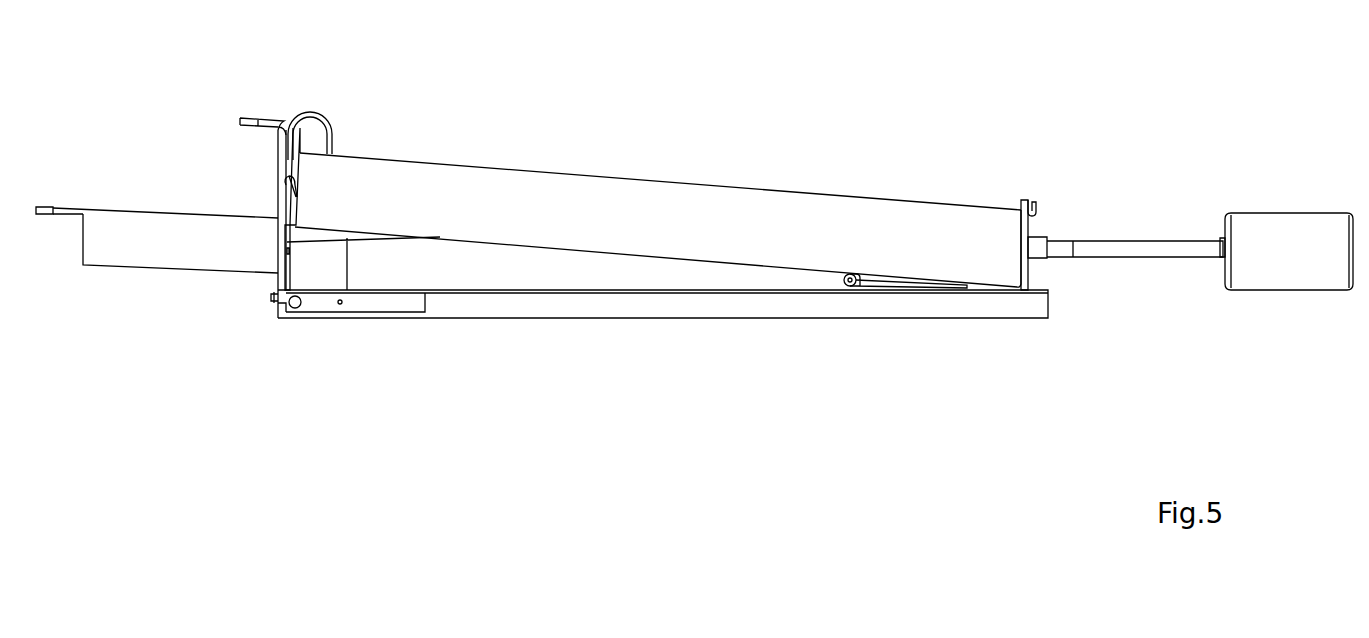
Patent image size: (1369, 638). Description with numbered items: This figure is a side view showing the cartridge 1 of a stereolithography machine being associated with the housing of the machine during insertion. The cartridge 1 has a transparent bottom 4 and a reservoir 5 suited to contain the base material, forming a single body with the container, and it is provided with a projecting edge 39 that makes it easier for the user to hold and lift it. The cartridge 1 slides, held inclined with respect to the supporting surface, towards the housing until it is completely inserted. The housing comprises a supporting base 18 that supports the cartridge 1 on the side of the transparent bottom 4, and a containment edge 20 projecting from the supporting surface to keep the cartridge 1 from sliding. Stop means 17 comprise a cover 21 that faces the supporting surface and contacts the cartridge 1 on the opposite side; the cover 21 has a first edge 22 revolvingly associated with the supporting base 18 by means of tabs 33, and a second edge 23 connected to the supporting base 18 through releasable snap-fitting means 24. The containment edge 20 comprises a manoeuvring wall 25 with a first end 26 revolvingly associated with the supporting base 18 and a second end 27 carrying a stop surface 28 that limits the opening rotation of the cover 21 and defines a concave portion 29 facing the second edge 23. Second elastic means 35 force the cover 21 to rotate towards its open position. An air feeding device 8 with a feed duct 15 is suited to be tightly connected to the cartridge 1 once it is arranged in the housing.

The cartridge 1 is at (125, 185).
The edge 39 is at (47, 200).
The reservoir 5 is at (123, 247).
The transparent bottom 4 is at (187, 272).
The releasable snap-fitting means 24 is at (277, 182).
The manoeuvring wall 25 is at (282, 202).
The first end 26 is at (277, 315).
The stop surface 28 is at (333, 120).
The stop means 17 is at (612, 160).
The concave portion 29 is at (315, 113).
The second edge 23 is at (307, 178).
The second end 27 is at (282, 182).
The cover 21 is at (660, 213).
The first edge 22 is at (1040, 195).
The tabs 33 is at (1037, 205).
The feed duct 15 is at (1150, 243).
The air feeding device 8 is at (1270, 248).
The supporting base 18 is at (634, 318).
The containment edge 20 is at (517, 265).
The second elastic means 35 is at (873, 287).